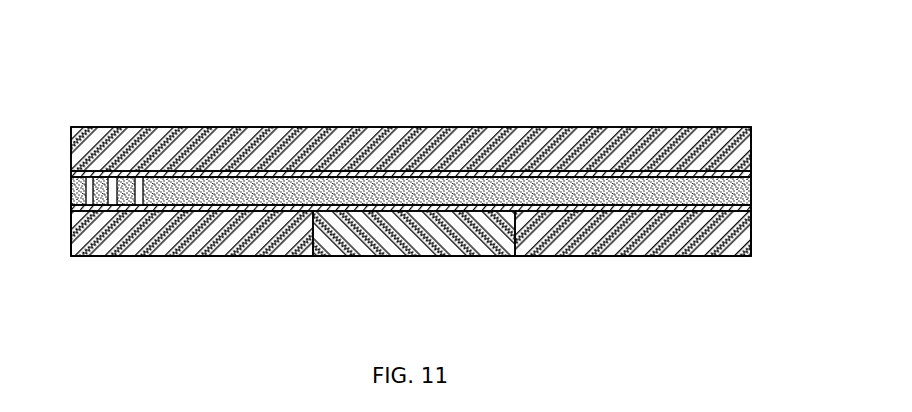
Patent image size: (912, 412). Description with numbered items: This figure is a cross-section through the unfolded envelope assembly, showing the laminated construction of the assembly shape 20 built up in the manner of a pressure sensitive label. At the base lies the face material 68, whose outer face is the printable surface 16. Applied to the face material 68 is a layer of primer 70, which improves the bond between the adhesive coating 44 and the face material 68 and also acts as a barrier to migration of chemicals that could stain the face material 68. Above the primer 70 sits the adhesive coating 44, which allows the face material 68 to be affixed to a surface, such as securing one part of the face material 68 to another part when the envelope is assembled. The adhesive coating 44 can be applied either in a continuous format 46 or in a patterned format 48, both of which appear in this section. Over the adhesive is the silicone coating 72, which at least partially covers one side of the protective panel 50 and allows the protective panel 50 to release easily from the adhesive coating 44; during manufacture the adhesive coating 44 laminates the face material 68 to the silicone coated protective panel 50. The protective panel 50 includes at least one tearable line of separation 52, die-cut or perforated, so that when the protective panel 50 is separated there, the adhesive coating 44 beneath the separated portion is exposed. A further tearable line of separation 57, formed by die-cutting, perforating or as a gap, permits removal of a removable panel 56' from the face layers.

The assembly shape 20 is at (431, 94).
The protective panel 50 is at (264, 127).
The tearable line of separation 52 is at (127, 125).
The patterned format 48 is at (68, 183).
The continuous format 46 is at (755, 182).
The silicone coating 72 is at (754, 171).
The adhesive coating 44 is at (752, 201).
The primer 70 is at (71, 211).
The face material 68 is at (184, 257).
The lower middle segment 56' is at (414, 271).
The printable surface 16 is at (556, 258).
The tearable line of separation 57 is at (313, 257).